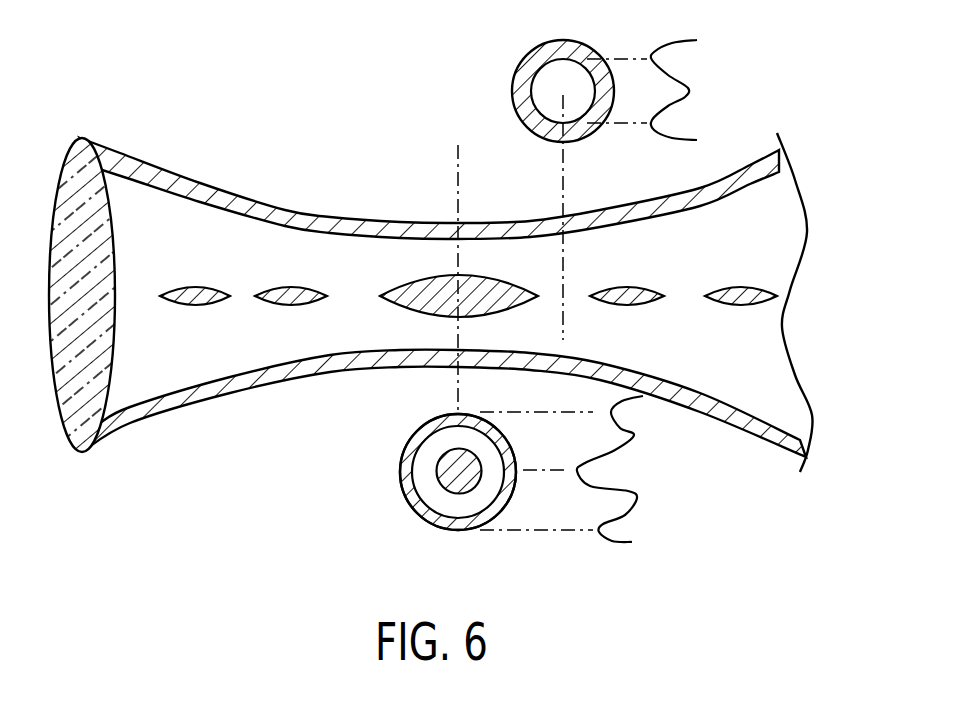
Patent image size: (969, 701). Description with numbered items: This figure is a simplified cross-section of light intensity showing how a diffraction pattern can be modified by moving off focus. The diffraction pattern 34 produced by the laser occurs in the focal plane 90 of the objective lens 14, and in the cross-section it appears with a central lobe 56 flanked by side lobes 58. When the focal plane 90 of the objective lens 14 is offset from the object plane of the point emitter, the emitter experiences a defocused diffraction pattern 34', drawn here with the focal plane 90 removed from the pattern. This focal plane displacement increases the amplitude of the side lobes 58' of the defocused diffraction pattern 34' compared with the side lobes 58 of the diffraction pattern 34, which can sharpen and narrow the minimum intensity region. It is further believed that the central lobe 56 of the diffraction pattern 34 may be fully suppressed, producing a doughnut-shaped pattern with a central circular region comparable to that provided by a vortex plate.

The objective lens 14 is at (69, 462).
The diffraction pattern 34 is at (477, 502).
The defocused diffraction pattern 34' is at (522, 76).
The central lobe 56 is at (400, 298).
The side lobes 58 is at (443, 350).
The side lobes 58' is at (717, 90).
The focal plane 90 is at (458, 197).